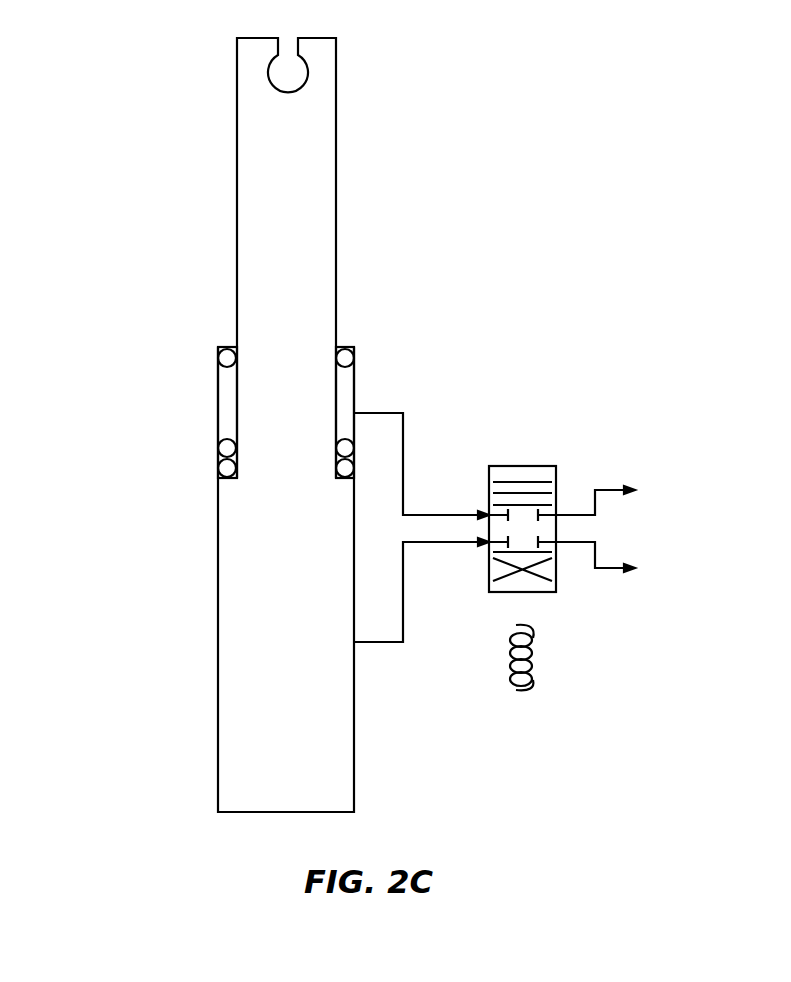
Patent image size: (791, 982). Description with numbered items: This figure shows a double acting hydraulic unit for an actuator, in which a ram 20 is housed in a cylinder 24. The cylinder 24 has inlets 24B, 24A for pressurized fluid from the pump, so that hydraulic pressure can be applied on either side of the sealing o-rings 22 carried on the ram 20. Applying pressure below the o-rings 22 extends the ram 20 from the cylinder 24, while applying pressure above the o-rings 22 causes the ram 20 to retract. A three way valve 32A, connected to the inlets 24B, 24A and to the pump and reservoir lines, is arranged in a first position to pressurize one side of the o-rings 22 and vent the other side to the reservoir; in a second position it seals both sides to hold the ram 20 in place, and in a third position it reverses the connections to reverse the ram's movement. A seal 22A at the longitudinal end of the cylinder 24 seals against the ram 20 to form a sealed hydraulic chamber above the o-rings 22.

The ram 20 is at (237, 219).
The sealing o-rings 22 is at (222, 467).
The seal 22A is at (228, 358).
The cylinder 24 is at (218, 641).
The inlet 24A is at (380, 642).
The inlet 24B is at (385, 413).
The three way valve 32A is at (522, 466).